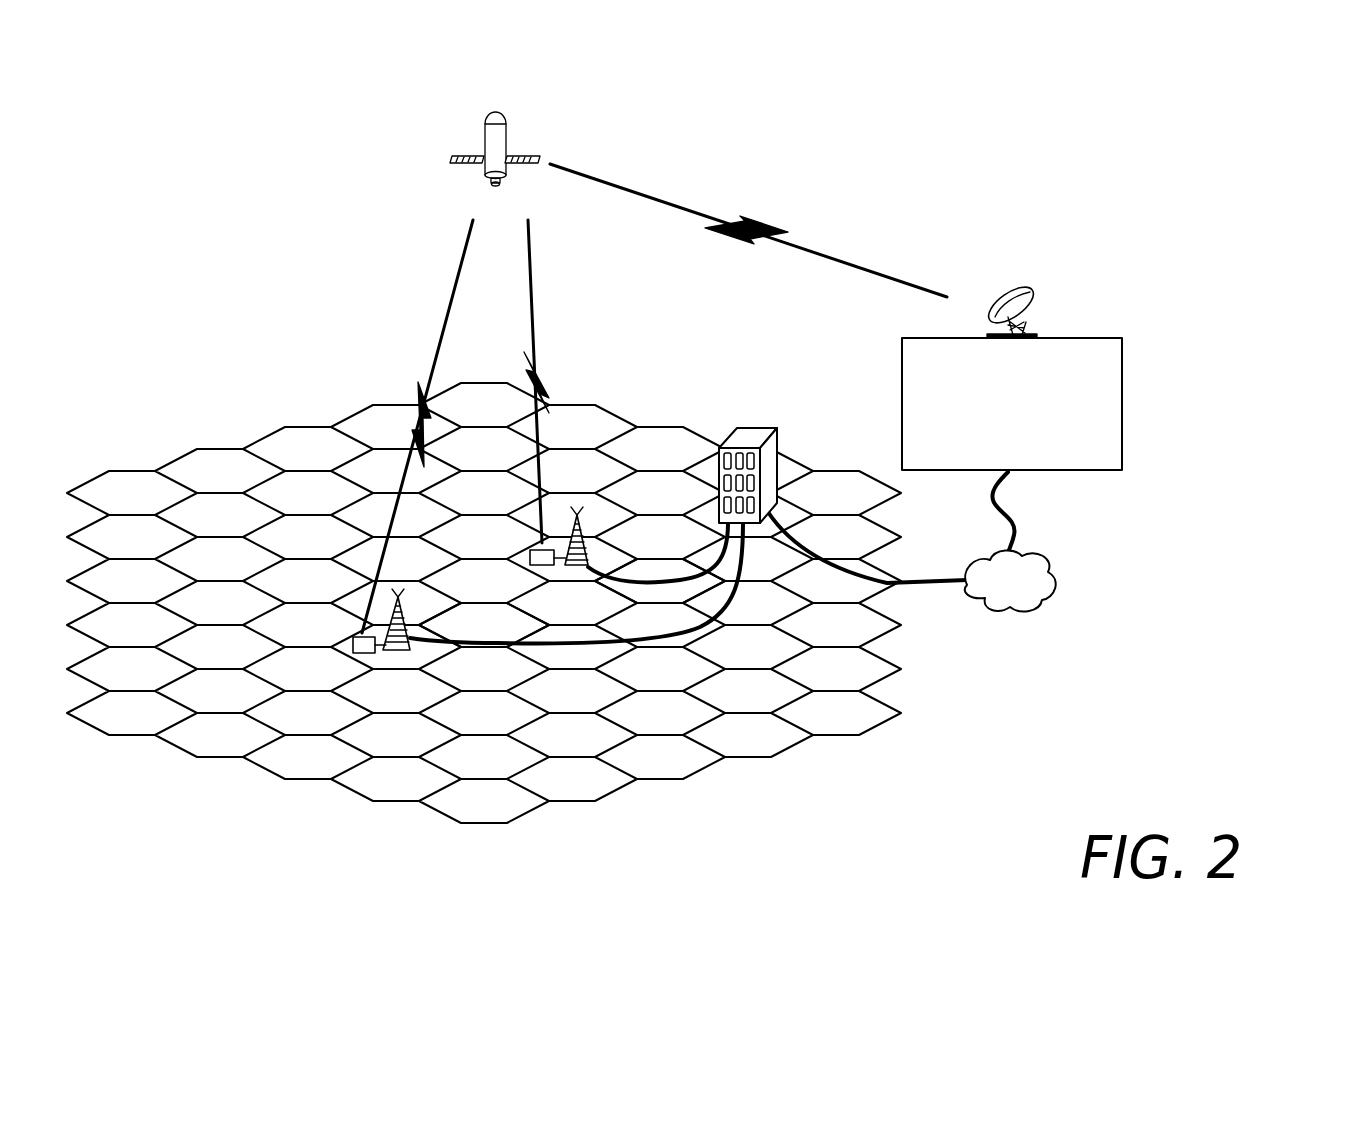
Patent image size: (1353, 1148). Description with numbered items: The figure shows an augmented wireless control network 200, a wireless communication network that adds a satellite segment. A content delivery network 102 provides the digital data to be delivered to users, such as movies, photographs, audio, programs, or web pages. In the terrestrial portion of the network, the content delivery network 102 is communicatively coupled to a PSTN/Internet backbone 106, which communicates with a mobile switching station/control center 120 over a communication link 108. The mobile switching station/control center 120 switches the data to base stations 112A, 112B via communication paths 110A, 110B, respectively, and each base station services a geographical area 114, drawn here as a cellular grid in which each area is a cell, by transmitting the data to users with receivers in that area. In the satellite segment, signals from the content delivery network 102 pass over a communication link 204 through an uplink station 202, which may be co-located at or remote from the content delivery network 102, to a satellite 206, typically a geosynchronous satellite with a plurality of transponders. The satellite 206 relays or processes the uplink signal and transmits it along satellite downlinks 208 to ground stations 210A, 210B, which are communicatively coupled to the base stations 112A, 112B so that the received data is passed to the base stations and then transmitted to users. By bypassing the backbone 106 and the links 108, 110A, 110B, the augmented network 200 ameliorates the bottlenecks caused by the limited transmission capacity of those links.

The augmented wireless control network 200 is at (135, 408).
The satellite 206 is at (508, 142).
The satellite downlink beams 208 is at (453, 325).
The communication link 204 is at (763, 223).
The uplink station 202 is at (1032, 310).
The content delivery network 102 is at (1122, 403).
The mobile switching station/control center 120 is at (755, 428).
The public switched telephone network and/or Internet backbone 106 is at (1042, 602).
The communication link 108 is at (920, 587).
The geographical area 114 is at (300, 427).
The communication path 110A is at (497, 646).
The communication path 110B is at (640, 580).
The base station 112A is at (380, 652).
The base station 112B is at (565, 570).
The ground station 210A is at (348, 637).
The ground station 210B is at (541, 548).